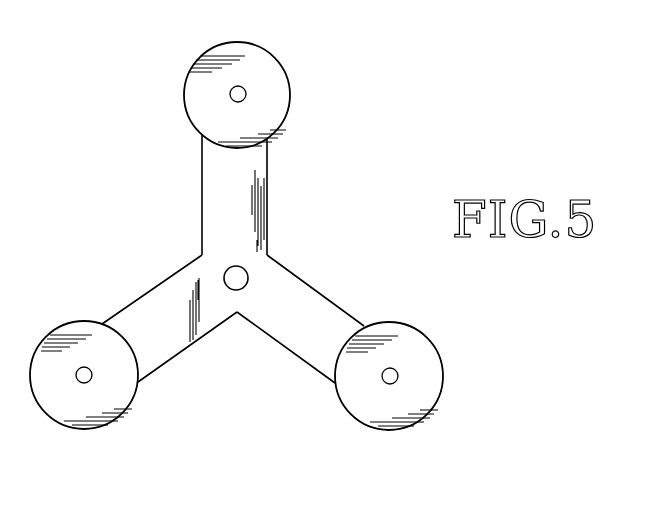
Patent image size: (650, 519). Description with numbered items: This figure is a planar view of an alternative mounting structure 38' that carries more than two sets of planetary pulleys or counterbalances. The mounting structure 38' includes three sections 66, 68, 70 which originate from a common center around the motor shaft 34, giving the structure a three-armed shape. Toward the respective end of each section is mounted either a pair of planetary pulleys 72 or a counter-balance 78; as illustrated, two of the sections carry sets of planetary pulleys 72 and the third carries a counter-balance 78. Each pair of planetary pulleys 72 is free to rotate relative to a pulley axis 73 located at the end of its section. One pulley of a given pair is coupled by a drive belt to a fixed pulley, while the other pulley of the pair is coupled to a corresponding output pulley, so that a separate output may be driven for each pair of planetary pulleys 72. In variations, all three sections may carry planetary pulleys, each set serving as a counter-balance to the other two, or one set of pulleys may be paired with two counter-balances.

The mounting structure 38' is at (259, 240).
The section 66 is at (268, 194).
The section 68 is at (338, 305).
The section 70 is at (157, 288).
The planetary pulleys 72 is at (258, 49).
The pulley axis 73 is at (231, 94).
The counter-balance 78 is at (68, 322).
The motor shaft 34 is at (232, 266).